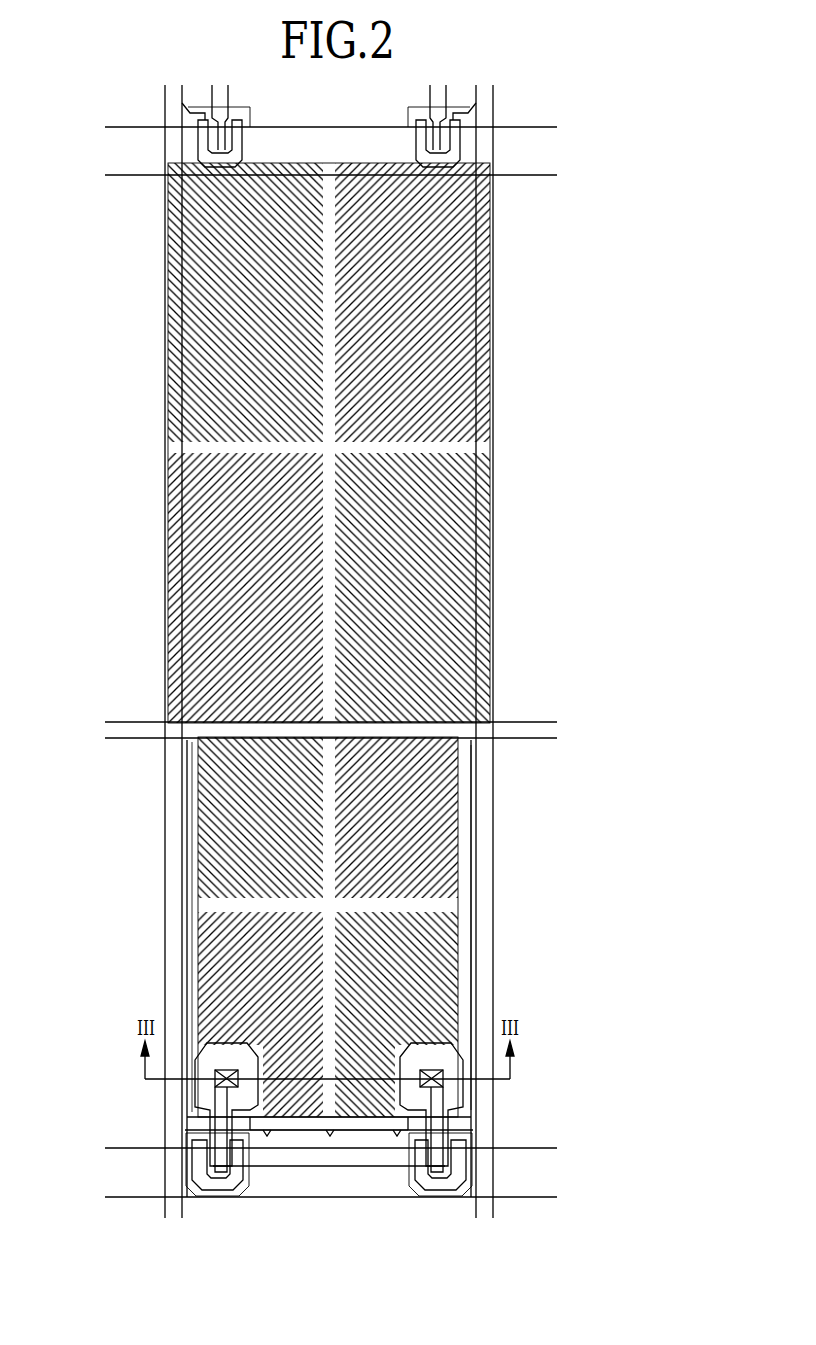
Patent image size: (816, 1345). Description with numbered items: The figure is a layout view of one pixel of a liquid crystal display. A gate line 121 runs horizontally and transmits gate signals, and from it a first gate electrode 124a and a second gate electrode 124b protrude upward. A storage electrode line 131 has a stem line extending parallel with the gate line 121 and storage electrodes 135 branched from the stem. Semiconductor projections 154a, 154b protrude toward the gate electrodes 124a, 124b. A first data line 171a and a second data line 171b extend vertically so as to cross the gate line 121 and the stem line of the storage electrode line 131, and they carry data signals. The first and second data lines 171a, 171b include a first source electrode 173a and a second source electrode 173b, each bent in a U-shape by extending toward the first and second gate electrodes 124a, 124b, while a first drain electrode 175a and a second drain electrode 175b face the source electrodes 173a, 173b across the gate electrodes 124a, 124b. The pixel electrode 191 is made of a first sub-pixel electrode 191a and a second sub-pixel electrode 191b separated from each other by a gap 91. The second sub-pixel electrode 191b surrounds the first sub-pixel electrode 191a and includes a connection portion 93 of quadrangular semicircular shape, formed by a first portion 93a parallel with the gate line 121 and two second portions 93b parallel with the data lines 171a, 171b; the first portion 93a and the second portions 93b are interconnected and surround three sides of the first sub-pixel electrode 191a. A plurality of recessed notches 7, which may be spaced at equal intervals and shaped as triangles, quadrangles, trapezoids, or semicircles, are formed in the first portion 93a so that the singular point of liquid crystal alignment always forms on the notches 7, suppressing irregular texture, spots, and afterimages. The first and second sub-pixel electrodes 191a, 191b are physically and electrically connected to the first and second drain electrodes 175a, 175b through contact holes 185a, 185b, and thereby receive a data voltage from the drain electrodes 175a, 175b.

The pixel electrode 191 is at (440, 640).
The first sub-pixel electrode 191a is at (445, 815).
The second sub-pixel electrode 191b is at (470, 432).
The storage electrode line 131 is at (525, 722).
The storage electrode 135 is at (185, 785).
The gap 91 is at (200, 905).
The connection portion 93 is at (481, 999).
The first portion 93a is at (345, 1140).
The second portion 93b is at (470, 888).
The first data line 171a is at (477, 978).
The second data line 171b is at (165, 968).
The first source electrode 173a is at (414, 1186).
The second source electrode 173b is at (246, 1186).
The first drain electrode 175a is at (446, 1117).
The second drain electrode 175b is at (212, 1117).
The contact hole 185a is at (445, 1082).
The contact hole 185b is at (213, 1082).
The projection 154a is at (469, 1172).
The projection 154b is at (189, 1172).
The first gate electrode 124a is at (383, 1180).
The second gate electrode 124b is at (270, 1180).
The gate line 121 is at (540, 1147).
The notch 7 is at (307, 1132).